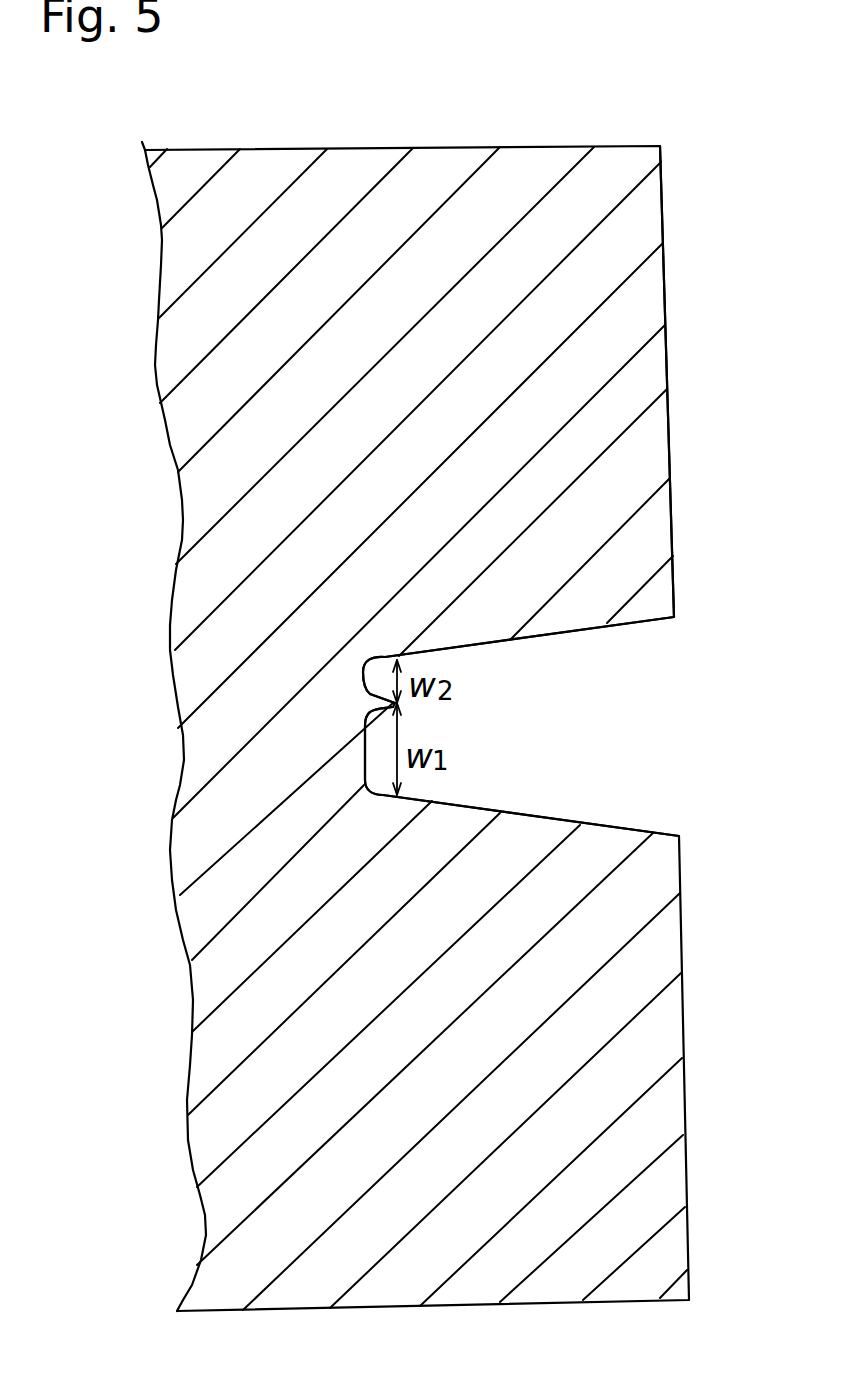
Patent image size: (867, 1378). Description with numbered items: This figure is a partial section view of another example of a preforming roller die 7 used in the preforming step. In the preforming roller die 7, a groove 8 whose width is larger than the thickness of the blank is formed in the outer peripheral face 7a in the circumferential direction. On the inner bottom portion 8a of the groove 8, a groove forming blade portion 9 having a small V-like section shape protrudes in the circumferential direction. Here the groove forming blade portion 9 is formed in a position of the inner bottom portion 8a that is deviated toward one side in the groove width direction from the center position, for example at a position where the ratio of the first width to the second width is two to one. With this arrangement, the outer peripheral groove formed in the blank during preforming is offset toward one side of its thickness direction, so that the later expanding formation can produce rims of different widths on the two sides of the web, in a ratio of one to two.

The preforming roller die 7 is at (528, 152).
The outer peripheral face 7a is at (662, 287).
The groove 8 is at (541, 809).
The inner bottom portion 8a is at (365, 760).
The groove forming blade portion 9 is at (397, 705).